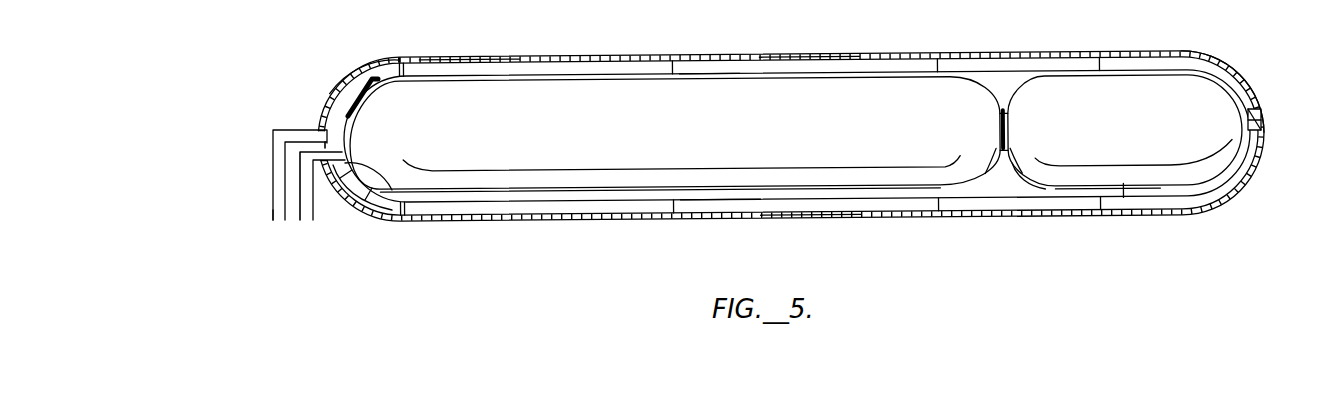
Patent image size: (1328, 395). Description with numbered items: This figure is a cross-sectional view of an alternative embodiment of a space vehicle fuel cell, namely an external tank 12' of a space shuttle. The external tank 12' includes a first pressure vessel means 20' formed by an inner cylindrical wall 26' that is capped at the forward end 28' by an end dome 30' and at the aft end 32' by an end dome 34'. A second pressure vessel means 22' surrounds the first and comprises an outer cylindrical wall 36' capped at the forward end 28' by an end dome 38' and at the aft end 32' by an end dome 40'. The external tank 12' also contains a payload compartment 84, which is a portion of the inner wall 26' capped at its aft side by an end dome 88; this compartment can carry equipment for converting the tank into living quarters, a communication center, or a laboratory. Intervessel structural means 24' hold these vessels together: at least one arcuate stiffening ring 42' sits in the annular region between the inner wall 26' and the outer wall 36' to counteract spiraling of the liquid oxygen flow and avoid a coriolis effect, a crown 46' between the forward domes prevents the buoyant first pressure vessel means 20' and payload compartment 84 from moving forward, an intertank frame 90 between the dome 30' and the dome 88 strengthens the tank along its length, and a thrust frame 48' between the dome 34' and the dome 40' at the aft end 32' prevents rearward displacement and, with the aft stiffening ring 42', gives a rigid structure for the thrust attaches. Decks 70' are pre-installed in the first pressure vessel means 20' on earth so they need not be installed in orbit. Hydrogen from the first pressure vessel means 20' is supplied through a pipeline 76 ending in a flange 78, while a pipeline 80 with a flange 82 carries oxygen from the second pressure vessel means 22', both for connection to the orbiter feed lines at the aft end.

The external tank 12' is at (791, 151).
The first pressure vessel means 20' is at (797, 115).
The second pressure vessel means 22' is at (720, 225).
The intervessel structural means 24' is at (710, 50).
The inner cylindrical wall 26' is at (809, 48).
The forward end 28' is at (1125, 108).
The end dome 30' is at (979, 88).
The aft end 32' is at (471, 35).
The end dome 34' is at (403, 207).
The outer cylindrical wall 36' is at (811, 233).
The end dome 38' is at (1222, 91).
The end dome 40' is at (346, 71).
The arcuate stiffening ring 42' is at (776, 119).
The crown 46' is at (1281, 113).
The thrust frame 48' is at (317, 94).
The decks 70' is at (675, 109).
The pipeline 76 is at (313, 194).
The flange 78 is at (313, 223).
The pipeline 80 is at (288, 132).
The flange 82 is at (273, 222).
The payload compartment 84 is at (1123, 178).
The end dome 88 is at (1020, 185).
The intertank frame 90 is at (1002, 152).